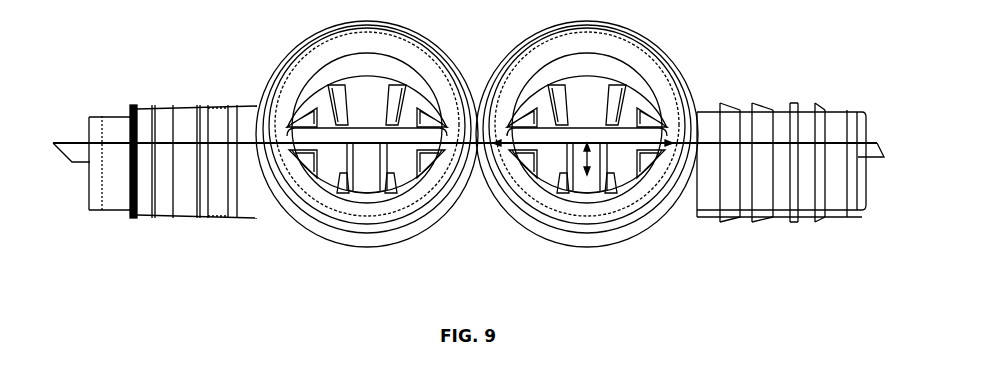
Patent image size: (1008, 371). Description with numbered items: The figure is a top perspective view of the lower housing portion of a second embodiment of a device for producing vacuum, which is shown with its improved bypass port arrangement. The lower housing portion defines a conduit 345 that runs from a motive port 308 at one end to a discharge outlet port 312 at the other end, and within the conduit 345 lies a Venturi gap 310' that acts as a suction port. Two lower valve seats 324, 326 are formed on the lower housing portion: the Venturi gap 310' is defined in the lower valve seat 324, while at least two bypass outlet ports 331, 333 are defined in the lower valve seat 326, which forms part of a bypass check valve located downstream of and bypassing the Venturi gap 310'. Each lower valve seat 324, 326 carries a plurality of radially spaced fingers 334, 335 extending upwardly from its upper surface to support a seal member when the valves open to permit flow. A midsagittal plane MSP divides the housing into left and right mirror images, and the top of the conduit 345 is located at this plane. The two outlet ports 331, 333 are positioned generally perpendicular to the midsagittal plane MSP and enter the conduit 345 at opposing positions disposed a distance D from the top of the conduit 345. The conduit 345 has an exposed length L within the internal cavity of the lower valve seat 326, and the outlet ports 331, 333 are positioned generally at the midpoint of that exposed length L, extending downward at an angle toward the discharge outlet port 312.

The motive port 308 is at (100, 208).
The discharge outlet port 312 is at (843, 210).
The lower valve seat 324 is at (432, 213).
The lower valve seat 326 is at (640, 227).
The bypass outlet port 331 is at (583, 175).
The bypass outlet port 333 is at (590, 83).
The radially spaced fingers 334 is at (337, 82).
The radially spaced fingers 335 is at (552, 83).
The conduit 345 is at (237, 185).
The Venturi gap 310' is at (361, 212).
The midsagittal plane MSP is at (72, 162).
The distance D is at (594, 160).
The exposed length L is at (677, 178).